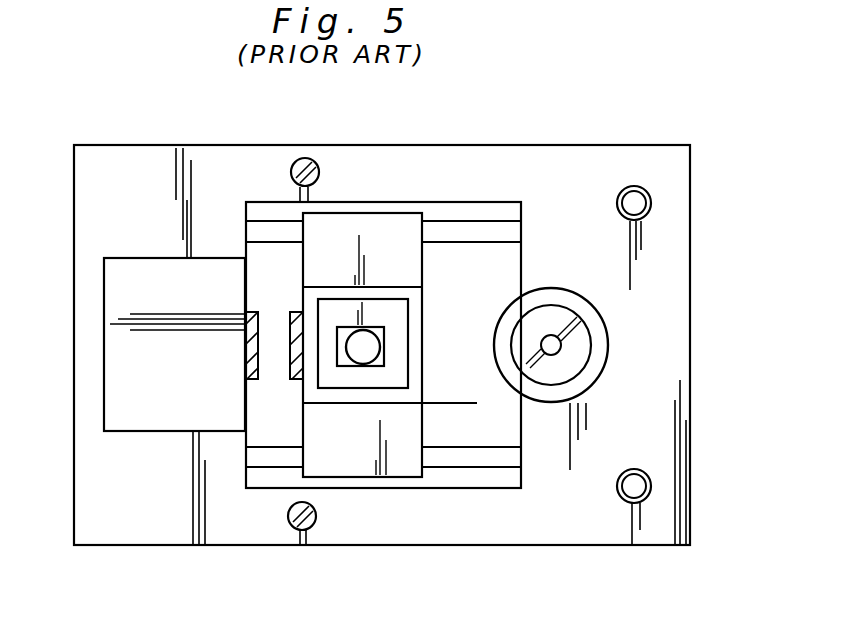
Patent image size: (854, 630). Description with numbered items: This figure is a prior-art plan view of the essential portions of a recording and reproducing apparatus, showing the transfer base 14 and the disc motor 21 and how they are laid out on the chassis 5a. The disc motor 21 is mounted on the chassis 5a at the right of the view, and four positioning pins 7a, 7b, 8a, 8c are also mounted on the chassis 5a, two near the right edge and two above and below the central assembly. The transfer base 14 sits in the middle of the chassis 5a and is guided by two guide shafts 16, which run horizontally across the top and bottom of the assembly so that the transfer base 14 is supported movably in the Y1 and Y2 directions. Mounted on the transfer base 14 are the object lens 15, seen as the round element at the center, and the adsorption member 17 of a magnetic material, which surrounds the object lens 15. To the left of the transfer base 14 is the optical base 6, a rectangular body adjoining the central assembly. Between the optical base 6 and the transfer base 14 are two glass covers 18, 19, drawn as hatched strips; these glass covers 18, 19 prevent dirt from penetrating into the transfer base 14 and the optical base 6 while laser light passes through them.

The chassis 5a is at (577, 162).
The optical base 6 is at (120, 347).
The positioning pin 7a is at (637, 200).
The positioning pin 7b is at (636, 482).
The positioning pin 8a is at (305, 162).
The positioning pin 8c is at (302, 530).
The transfer base 14 is at (363, 465).
The object lens 15 is at (368, 340).
The guide shaft 16 is at (493, 230).
The adsorption member 17 is at (396, 373).
The glass cover 18 is at (292, 380).
The glass cover 19 is at (253, 312).
The disc motor 21 is at (600, 341).